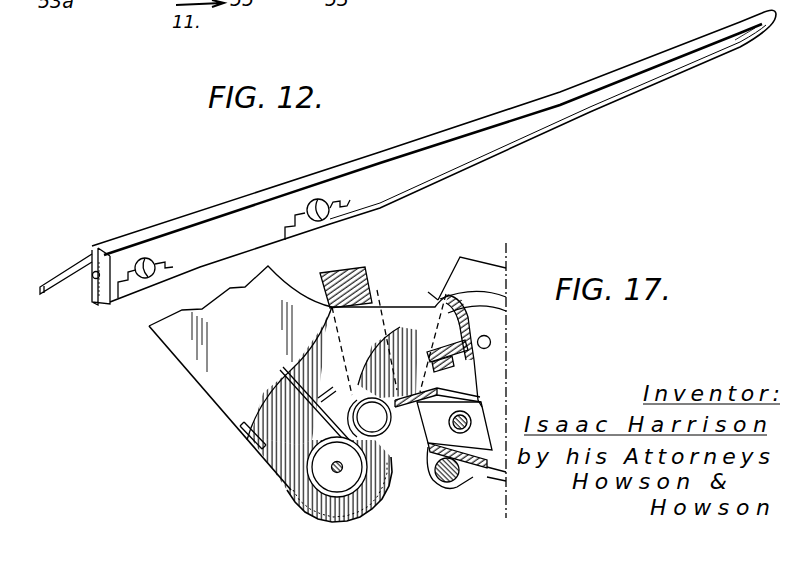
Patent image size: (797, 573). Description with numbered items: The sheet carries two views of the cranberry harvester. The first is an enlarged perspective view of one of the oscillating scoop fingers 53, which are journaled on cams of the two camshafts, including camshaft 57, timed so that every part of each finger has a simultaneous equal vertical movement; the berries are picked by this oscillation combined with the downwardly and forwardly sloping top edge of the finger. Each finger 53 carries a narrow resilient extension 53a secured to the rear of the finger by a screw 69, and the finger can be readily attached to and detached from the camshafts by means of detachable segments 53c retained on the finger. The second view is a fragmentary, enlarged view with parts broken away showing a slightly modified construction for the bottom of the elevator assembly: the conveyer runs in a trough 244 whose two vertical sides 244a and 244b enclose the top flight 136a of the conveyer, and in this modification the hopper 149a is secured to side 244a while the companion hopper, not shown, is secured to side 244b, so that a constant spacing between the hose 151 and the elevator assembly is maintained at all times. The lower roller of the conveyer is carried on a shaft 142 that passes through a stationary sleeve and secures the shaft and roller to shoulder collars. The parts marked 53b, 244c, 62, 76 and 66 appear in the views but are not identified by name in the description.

In FIG. 12, the oscillating fingers 53 is at (257, 199).
In FIG. 17, the oscillating fingers 53 is at (438, 388).
In FIG. 12, the resilient extension 53a is at (74, 262).
In FIG. 17, the resilient extension 53a is at (431, 365).
In FIG. 12, the blade tip 53b is at (736, 42).
In FIG. 12, the detachable segments 53c is at (126, 268).
In FIG. 12, the screw 69 is at (95, 277).
In FIG. 17, the trough 244 is at (207, 372).
In FIG. 17, the side of trough 244a is at (387, 311).
In FIG. 17, the side of trough 244b is at (231, 418).
In FIG. 17, the rounded end of bracket 244c is at (380, 502).
In FIG. 17, the top flight of the conveyer 136a is at (250, 447).
In FIG. 17, the shaft 142 is at (333, 468).
In FIG. 17, the hose 151 is at (364, 285).
In FIG. 17, the hopper 149a is at (472, 285).
In FIG. 17, the lever 62 is at (468, 262).
In FIG. 17, the hole 76 is at (491, 342).
In FIG. 17, the camshaft 57 is at (466, 419).
In FIG. 17, the pin 66 is at (452, 481).